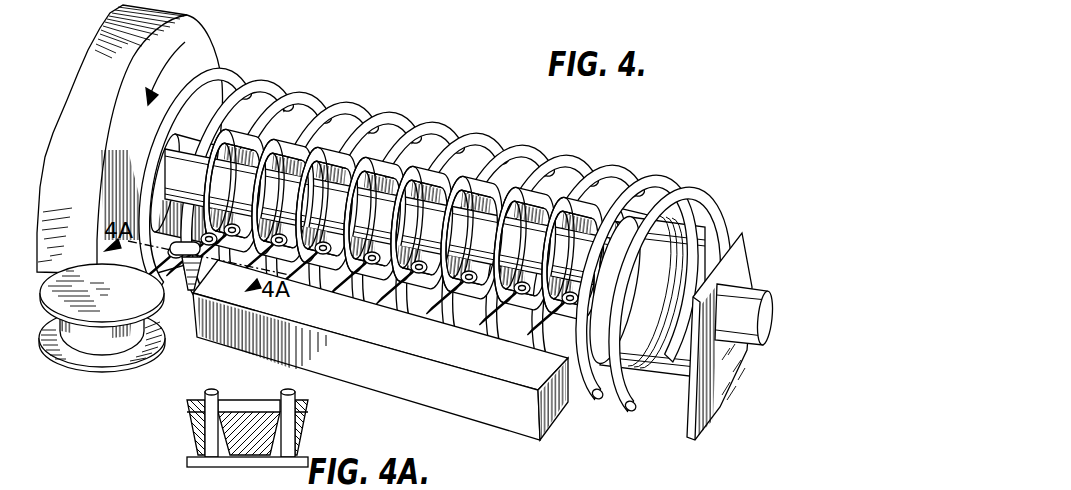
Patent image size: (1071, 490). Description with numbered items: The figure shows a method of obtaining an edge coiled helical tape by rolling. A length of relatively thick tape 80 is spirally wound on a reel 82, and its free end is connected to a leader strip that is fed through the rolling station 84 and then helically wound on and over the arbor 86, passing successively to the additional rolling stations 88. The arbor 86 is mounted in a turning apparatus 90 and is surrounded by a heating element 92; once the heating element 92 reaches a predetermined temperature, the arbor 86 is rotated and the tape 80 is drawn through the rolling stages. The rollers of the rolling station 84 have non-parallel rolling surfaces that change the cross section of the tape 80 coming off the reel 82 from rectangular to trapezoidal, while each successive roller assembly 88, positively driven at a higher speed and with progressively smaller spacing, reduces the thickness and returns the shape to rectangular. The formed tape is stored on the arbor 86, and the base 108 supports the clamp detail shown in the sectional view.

In FIG. 4, the tape 80 is at (80, 343).
In FIG. 4A, the tape 80 is at (233, 413).
In FIG. 4, the reel 82 is at (120, 372).
In FIG. 4, the rolling station 84 is at (172, 308).
In FIG. 4A, the rolling station 84 is at (197, 430).
In FIG. 4, the arbor 86 is at (195, 170).
In FIG. 4, the additional rolling stations 88 is at (275, 205).
In FIG. 4, the turning apparatus 90 is at (197, 32).
In FIG. 4, the heating element 92 is at (273, 85).
In FIG. 4A, the base plate 108 is at (247, 473).